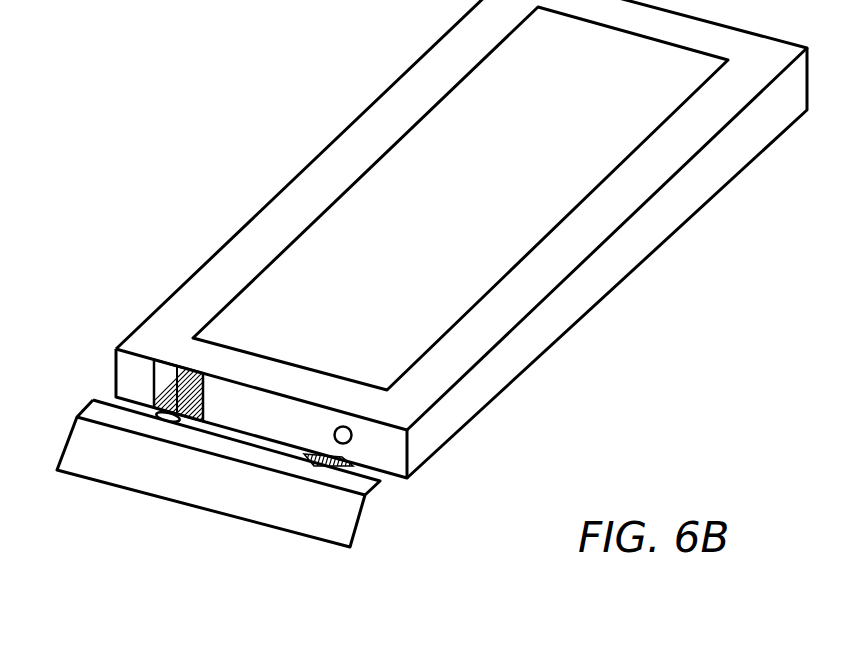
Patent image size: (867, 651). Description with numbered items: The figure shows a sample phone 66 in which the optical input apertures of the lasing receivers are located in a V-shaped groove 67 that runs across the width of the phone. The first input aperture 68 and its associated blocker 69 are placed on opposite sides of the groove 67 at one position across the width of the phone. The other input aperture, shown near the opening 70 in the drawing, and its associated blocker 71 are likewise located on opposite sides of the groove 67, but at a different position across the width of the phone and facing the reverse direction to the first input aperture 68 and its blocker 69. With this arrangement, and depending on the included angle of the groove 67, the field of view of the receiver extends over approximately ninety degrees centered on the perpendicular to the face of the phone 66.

The sample phone 66 is at (318, 152).
The V-shaped groove 67 is at (115, 366).
The first input aperture 68 is at (352, 438).
The blocker 69 is at (317, 463).
The opening 70 is at (162, 418).
The blocker 71 is at (178, 372).